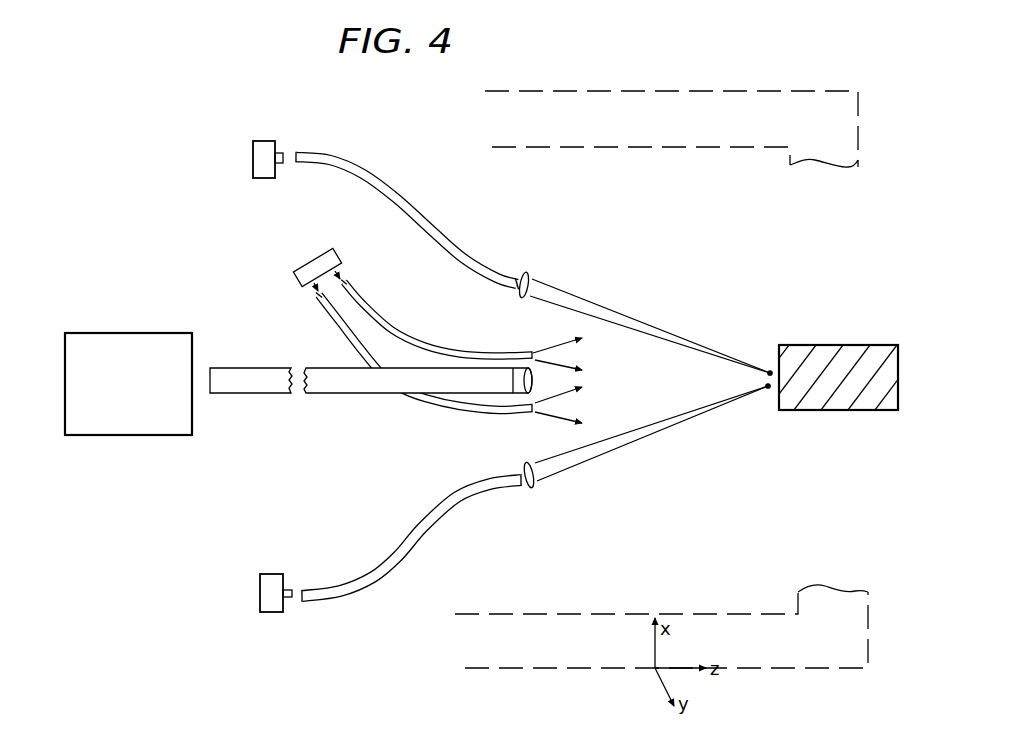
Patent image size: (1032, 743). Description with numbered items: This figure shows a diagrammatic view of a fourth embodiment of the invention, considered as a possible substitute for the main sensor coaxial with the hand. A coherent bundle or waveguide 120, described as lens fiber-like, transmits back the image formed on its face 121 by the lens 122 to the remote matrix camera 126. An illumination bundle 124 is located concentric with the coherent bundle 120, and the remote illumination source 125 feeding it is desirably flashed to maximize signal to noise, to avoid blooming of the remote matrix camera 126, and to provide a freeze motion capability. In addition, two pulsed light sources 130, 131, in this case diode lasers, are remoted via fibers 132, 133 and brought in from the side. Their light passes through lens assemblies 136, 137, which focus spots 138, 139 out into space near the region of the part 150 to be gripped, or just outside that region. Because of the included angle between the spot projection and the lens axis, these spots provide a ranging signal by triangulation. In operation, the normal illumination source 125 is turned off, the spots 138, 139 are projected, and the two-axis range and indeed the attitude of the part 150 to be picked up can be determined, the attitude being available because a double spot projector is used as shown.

The coherent bundle 120 is at (368, 390).
The face 121 is at (513, 378).
The lens 122 is at (535, 378).
The illumination bundle 124 is at (423, 338).
The illumination source 125 is at (310, 270).
The remote matrix camera 126 is at (140, 396).
The pulsed light source 130 is at (275, 605).
The pulsed light source 131 is at (267, 142).
The fiber 132 is at (383, 578).
The fiber 133 is at (390, 202).
The lens assembly 136 is at (536, 488).
The lens assembly 137 is at (533, 275).
The spot 138 is at (768, 389).
The spot 139 is at (770, 370).
The part 150 is at (893, 345).